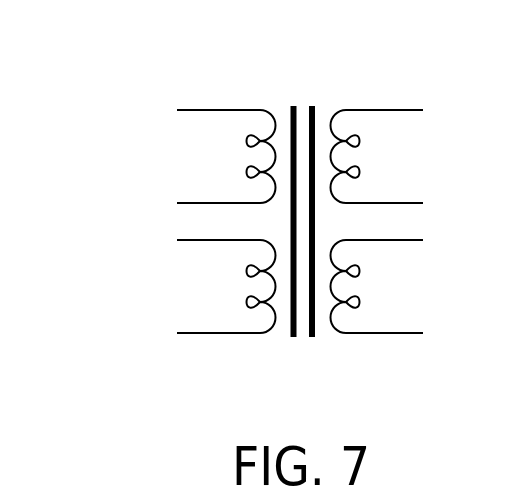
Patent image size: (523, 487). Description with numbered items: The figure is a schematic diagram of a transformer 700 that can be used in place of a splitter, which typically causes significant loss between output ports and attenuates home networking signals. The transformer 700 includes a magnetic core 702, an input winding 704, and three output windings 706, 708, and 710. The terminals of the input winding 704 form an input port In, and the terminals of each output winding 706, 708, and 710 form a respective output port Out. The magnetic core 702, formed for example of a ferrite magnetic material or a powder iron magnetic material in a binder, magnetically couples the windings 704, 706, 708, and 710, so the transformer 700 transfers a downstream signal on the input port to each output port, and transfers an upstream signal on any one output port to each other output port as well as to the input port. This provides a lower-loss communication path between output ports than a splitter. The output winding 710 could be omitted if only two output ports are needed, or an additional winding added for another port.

The transformer 700 is at (122, 72).
The magnetic core 702 is at (302, 100).
The input winding 704 is at (197, 87).
The output winding 706 is at (413, 88).
The output winding 708 is at (415, 355).
The output winding 710 is at (185, 355).